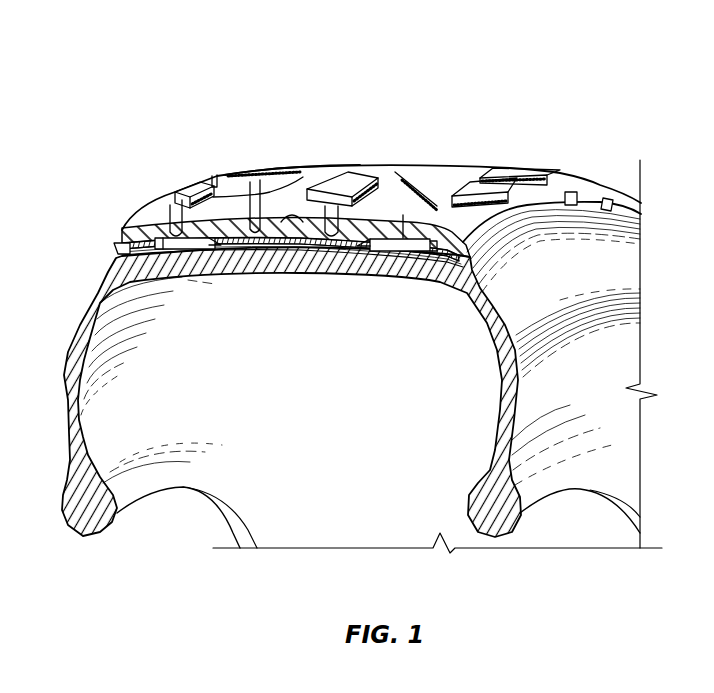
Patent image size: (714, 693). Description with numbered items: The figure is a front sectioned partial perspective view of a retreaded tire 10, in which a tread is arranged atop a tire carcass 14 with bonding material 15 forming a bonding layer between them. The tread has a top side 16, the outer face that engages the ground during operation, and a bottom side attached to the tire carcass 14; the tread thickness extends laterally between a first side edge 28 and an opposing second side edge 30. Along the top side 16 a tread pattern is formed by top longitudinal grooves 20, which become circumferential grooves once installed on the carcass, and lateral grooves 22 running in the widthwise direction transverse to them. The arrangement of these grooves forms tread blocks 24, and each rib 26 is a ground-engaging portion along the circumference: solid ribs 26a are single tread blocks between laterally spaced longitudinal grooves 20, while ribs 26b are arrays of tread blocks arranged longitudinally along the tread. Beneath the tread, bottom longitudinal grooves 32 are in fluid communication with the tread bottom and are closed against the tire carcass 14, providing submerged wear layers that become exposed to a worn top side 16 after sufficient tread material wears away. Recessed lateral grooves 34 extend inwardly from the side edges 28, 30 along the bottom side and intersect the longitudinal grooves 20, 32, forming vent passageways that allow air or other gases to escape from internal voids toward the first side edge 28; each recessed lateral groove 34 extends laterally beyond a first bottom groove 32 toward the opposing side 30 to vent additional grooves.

The retreaded tire 10 is at (117, 51).
The tire carcass 14 is at (67, 357).
The bonding material 15 is at (262, 263).
The top side 16 is at (293, 218).
The top longitudinal grooves 20 is at (393, 170).
The lateral grooves 22 is at (216, 173).
The tread blocks 24 is at (195, 187).
The rib 26 is at (280, 180).
The solid ribs 26a is at (296, 158).
The ribs 26b is at (237, 157).
The first side edge 28 is at (120, 246).
The second side edge 30 is at (540, 205).
The bottom longitudinal grooves 32 is at (193, 242).
The recessed lateral grooves 34 is at (607, 198).